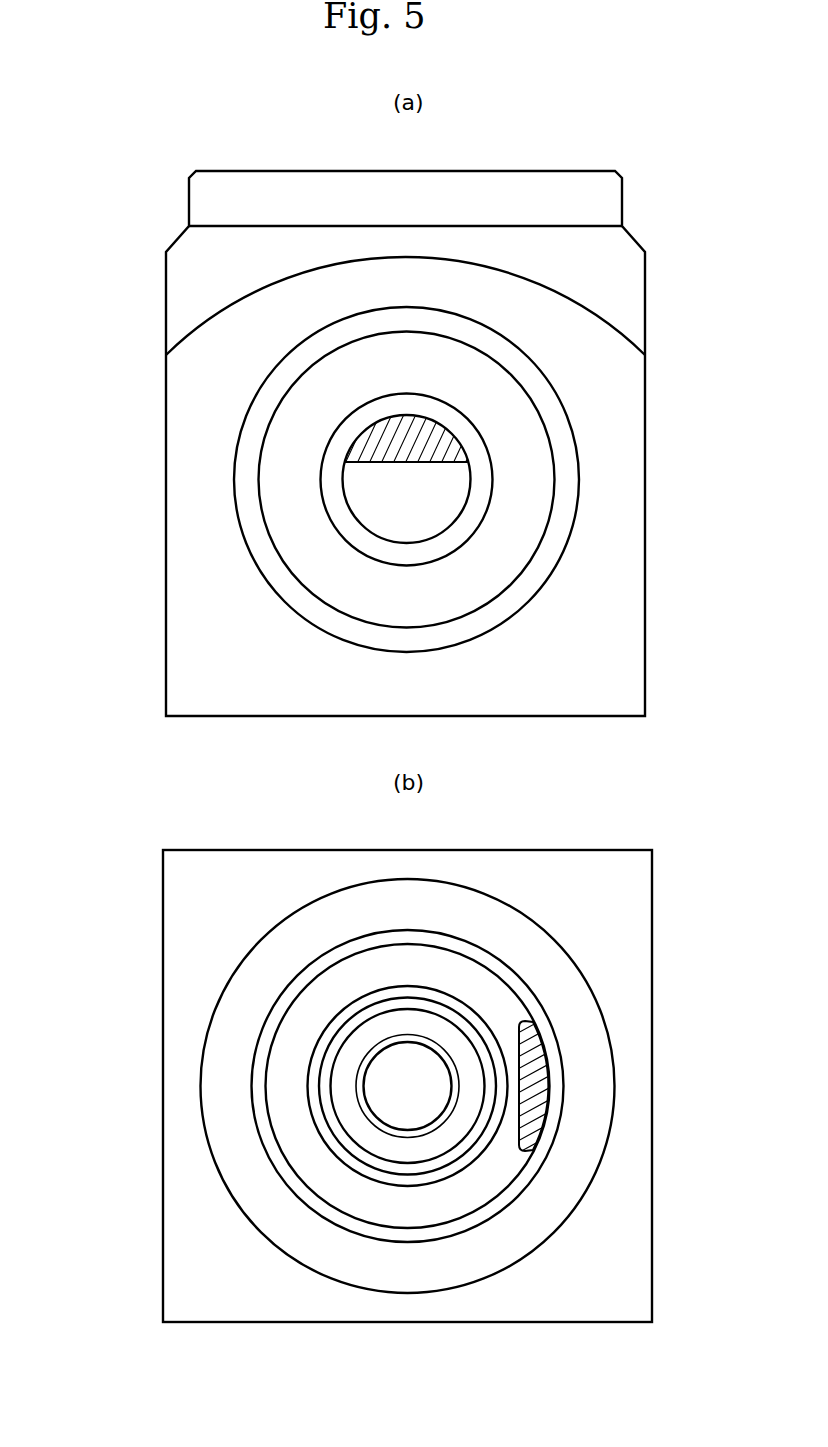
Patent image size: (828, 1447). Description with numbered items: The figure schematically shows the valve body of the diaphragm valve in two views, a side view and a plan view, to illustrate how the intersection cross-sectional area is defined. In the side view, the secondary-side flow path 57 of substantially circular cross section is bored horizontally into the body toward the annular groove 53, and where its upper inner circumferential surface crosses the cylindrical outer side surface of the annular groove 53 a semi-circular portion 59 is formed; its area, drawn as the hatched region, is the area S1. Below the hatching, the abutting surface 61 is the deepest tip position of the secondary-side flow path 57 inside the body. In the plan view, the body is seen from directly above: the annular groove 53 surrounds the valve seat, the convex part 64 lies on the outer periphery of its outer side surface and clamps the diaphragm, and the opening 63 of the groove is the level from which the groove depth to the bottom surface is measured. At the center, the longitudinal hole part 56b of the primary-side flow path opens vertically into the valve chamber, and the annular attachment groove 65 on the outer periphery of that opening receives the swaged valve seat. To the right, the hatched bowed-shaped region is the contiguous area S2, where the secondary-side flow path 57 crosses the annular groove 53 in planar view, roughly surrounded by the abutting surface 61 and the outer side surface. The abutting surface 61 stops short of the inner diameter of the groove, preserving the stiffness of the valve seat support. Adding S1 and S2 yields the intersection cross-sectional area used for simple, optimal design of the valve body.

The annular groove 53 is at (287, 1103).
The longitudinal hole part 56b is at (410, 1125).
The secondary-side flow path 57 is at (405, 540).
The semi-circular portion 59 is at (372, 436).
The abutting surface 61 is at (405, 492).
The opening 63 is at (438, 1122).
The convex part 64 is at (270, 1030).
The annular attachment groove 65 is at (463, 1122).
The area of the semi-circular portion S1 is at (408, 441).
The contiguous area of the semicircular notched groove S2 is at (543, 1085).